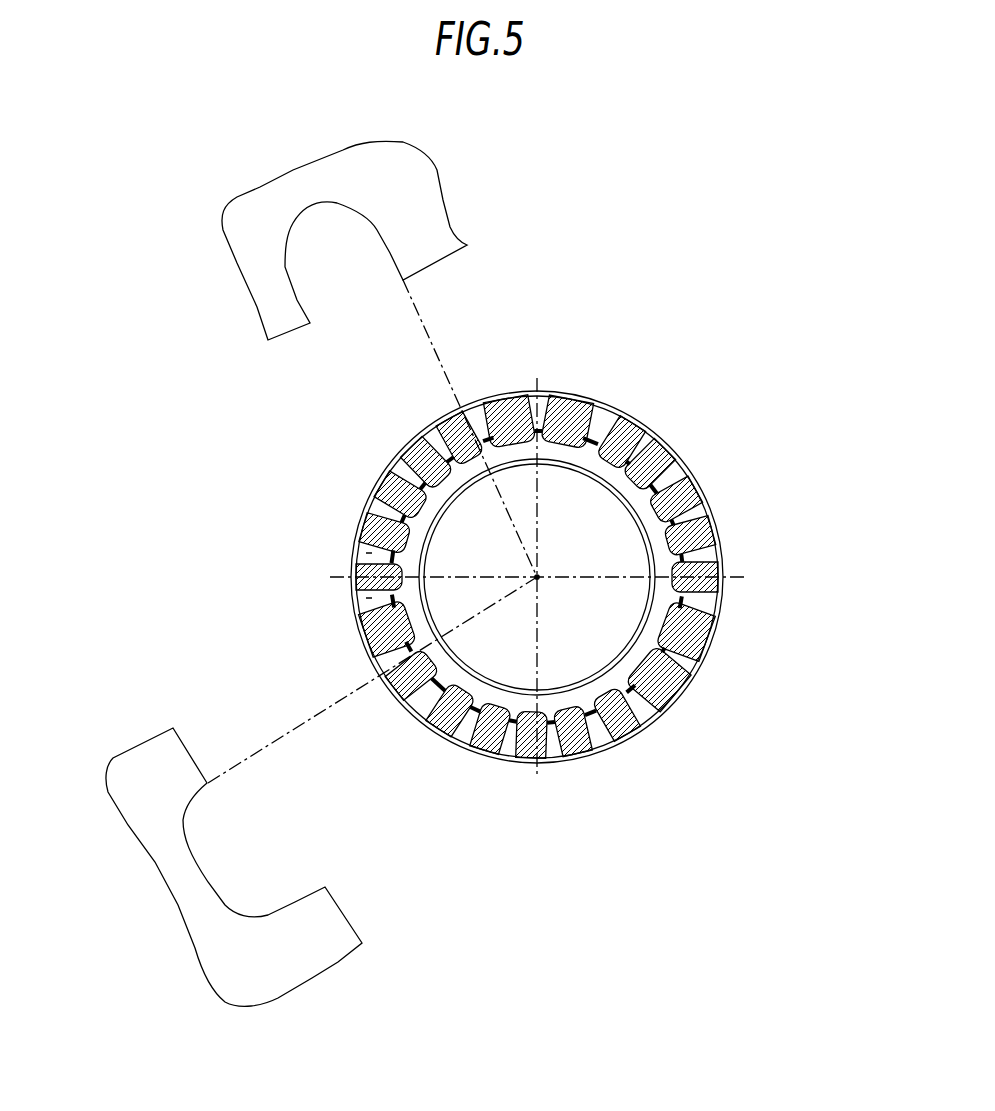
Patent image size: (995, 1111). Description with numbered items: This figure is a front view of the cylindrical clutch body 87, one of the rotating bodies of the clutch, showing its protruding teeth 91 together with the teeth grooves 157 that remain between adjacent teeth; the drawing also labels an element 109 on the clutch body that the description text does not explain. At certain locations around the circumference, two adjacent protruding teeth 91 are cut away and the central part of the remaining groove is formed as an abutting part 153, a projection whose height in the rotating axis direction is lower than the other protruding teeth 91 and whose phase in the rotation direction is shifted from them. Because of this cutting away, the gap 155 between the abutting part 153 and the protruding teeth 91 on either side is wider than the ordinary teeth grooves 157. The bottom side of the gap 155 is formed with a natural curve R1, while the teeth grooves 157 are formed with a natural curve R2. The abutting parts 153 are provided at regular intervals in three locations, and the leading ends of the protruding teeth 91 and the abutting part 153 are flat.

The cylindrical clutch body 87 is at (706, 466).
The protruding teeth 91 is at (637, 417).
The bent portion of conductor 109 is at (640, 418).
The abutting part 153 is at (548, 390).
The gap 155 is at (587, 393).
The teeth grooves 157 is at (462, 478).
The natural curve R1 is at (183, 815).
The natural curve R2 is at (350, 207).